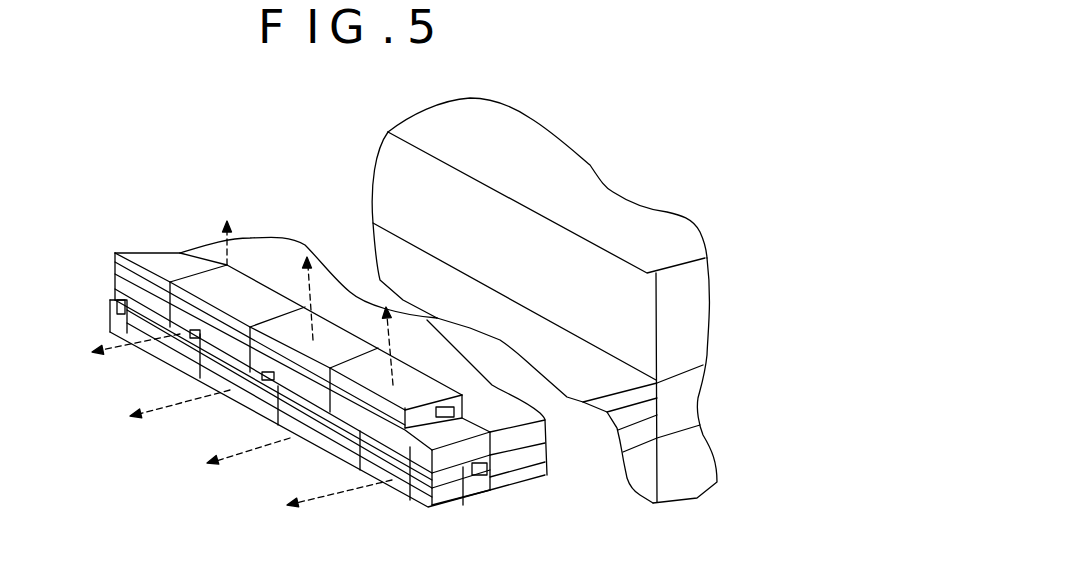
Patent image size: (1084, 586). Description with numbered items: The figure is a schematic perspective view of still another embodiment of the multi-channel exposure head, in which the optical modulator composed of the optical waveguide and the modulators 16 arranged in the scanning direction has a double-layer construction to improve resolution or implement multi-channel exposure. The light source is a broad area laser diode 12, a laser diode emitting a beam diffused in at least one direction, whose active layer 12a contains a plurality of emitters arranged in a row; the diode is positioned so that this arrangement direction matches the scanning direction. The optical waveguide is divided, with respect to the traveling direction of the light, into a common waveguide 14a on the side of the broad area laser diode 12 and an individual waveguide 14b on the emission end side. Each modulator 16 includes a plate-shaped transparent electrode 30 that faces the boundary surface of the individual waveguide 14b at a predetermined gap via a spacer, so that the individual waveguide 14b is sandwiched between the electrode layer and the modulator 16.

The broad area laser diode 12 is at (585, 188).
The active layer 12a is at (683, 405).
The common waveguide 14a is at (330, 300).
The individual waveguide 14b is at (400, 492).
The modulator 16 is at (264, 300).
The transparent electrode 30 is at (180, 253).